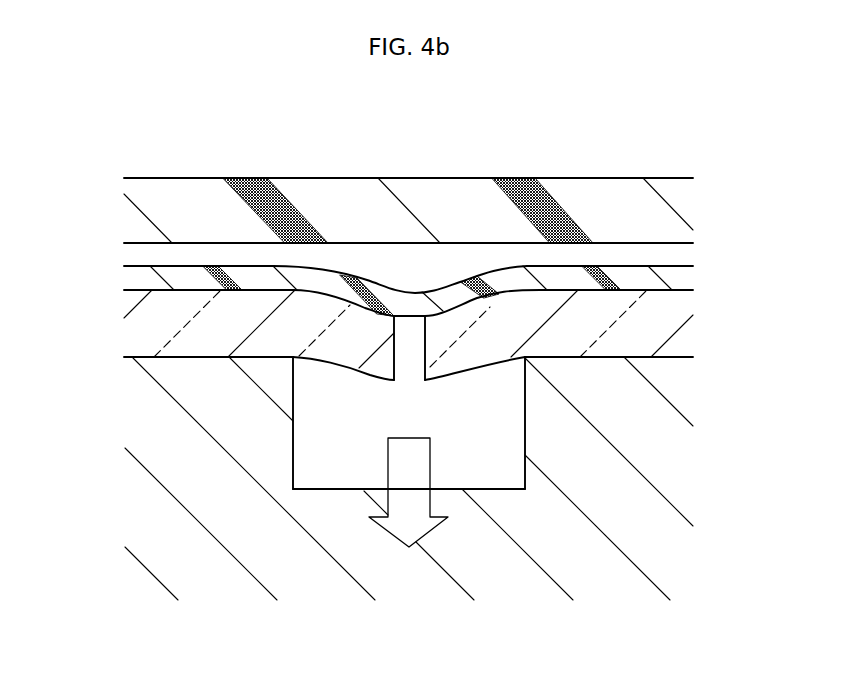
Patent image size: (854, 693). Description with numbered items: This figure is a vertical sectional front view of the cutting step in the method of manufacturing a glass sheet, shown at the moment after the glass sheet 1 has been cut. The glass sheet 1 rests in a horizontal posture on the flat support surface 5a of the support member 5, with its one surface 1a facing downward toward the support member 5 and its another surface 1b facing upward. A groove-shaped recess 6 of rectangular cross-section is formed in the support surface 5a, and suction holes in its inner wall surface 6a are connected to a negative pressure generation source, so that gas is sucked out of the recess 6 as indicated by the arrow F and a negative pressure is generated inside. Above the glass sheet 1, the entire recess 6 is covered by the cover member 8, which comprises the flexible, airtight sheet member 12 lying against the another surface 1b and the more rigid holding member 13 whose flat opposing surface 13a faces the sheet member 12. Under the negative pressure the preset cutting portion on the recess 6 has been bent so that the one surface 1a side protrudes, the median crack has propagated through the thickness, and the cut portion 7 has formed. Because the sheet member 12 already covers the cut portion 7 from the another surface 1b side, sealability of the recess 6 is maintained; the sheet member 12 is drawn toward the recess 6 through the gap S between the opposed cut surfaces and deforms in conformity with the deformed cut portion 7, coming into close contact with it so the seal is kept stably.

The glass sheet 1 is at (746, 331).
The one surface 1a is at (330, 360).
The another surface 1b is at (322, 293).
The support member 5 is at (752, 482).
The support surface 5a is at (147, 357).
The recess 6 is at (511, 514).
The inner wall surface 6a is at (323, 490).
The cut portion 7 is at (429, 402).
The cover member 8 is at (491, 146).
The sheet member 12 is at (675, 277).
The holding member 13 is at (662, 210).
The opposing surface 13a is at (393, 243).
The gap S is at (415, 367).
The arrow F is at (408, 492).